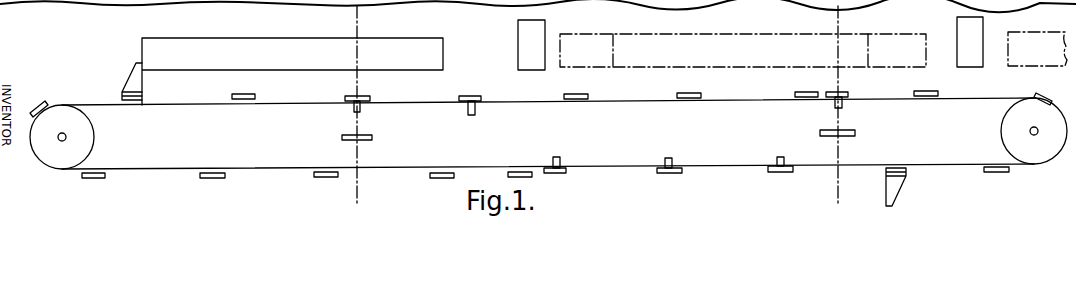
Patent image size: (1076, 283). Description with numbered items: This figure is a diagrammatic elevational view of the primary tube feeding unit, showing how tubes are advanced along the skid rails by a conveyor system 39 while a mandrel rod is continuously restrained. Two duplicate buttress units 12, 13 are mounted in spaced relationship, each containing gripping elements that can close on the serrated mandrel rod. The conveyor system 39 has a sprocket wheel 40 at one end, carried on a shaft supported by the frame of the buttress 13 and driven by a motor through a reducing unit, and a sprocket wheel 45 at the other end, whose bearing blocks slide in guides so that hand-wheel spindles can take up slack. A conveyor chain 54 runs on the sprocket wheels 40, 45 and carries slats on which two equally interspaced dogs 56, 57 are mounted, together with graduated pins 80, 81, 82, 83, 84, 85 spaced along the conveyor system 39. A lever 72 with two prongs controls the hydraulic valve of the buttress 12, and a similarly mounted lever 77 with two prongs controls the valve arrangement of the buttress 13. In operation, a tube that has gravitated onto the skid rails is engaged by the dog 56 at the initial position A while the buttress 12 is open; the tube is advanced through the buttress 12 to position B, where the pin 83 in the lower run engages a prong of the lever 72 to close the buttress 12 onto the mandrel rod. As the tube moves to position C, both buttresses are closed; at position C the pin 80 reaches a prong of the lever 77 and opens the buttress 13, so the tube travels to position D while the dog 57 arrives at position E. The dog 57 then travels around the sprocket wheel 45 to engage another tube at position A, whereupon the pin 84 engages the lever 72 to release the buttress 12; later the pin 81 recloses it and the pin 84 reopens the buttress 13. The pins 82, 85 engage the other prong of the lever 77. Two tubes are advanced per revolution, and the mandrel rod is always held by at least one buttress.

The conveyor system 39 is at (197, 105).
The sprocket wheel 45 is at (85, 138).
The sprocket wheel 40 is at (1001, 130).
The position E is at (48, 162).
The initial position A is at (142, 47).
The dog 56 is at (131, 74).
The buttress unit 12 is at (343, 27).
The lever 72 is at (408, 14).
The pin 80 is at (350, 105).
The pin 81 is at (359, 112).
The pin 82 is at (476, 111).
The conveyor chain 54 is at (378, 167).
The pin 85 is at (556, 157).
The pin 84 is at (673, 150).
The pin 83 is at (789, 150).
The buttress unit 13 is at (822, 26).
The lever 77 is at (855, 133).
The position B is at (560, 40).
The position C is at (616, 40).
The position D is at (1043, 32).
The dog 57 is at (900, 193).